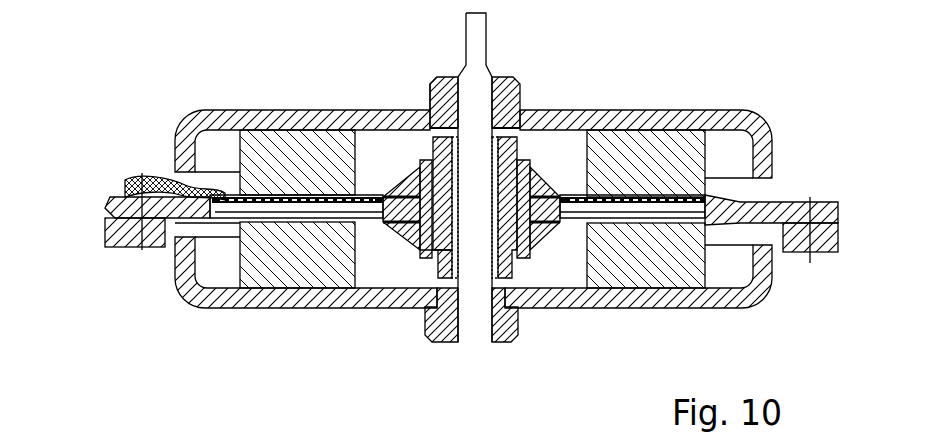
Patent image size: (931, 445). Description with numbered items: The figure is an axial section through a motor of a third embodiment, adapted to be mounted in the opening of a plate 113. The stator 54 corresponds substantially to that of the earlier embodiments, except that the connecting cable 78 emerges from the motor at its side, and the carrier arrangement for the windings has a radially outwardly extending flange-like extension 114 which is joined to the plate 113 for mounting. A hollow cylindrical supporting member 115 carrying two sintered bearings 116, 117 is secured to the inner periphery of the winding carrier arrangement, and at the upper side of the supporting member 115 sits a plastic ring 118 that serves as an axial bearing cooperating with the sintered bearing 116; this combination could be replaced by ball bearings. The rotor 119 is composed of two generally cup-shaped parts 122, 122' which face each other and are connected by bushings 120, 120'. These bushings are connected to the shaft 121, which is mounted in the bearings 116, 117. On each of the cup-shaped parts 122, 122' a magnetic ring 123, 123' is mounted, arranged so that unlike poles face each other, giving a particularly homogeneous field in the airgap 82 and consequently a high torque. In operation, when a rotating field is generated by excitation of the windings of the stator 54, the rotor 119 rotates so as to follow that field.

The stator 54 is at (585, 188).
The connecting cable 78 is at (150, 180).
The airgap 82 is at (263, 217).
The plate 113 is at (130, 232).
The flange-like extension 114 is at (822, 212).
The hollow cylindrical supporting member 115 is at (560, 135).
The sintered bearing 116 is at (430, 168).
The sintered bearing 117 is at (432, 272).
The plastic ring 118 is at (515, 118).
The rotor 119 is at (422, 107).
The bushing 120 is at (505, 92).
The bushing 120' is at (506, 325).
The shaft 121 is at (491, 225).
The cup-shaped part 122 is at (473, 117).
The cup-shaped part 122' is at (473, 300).
The magnetic ring 123 is at (272, 125).
The magnetic ring 123' is at (297, 292).